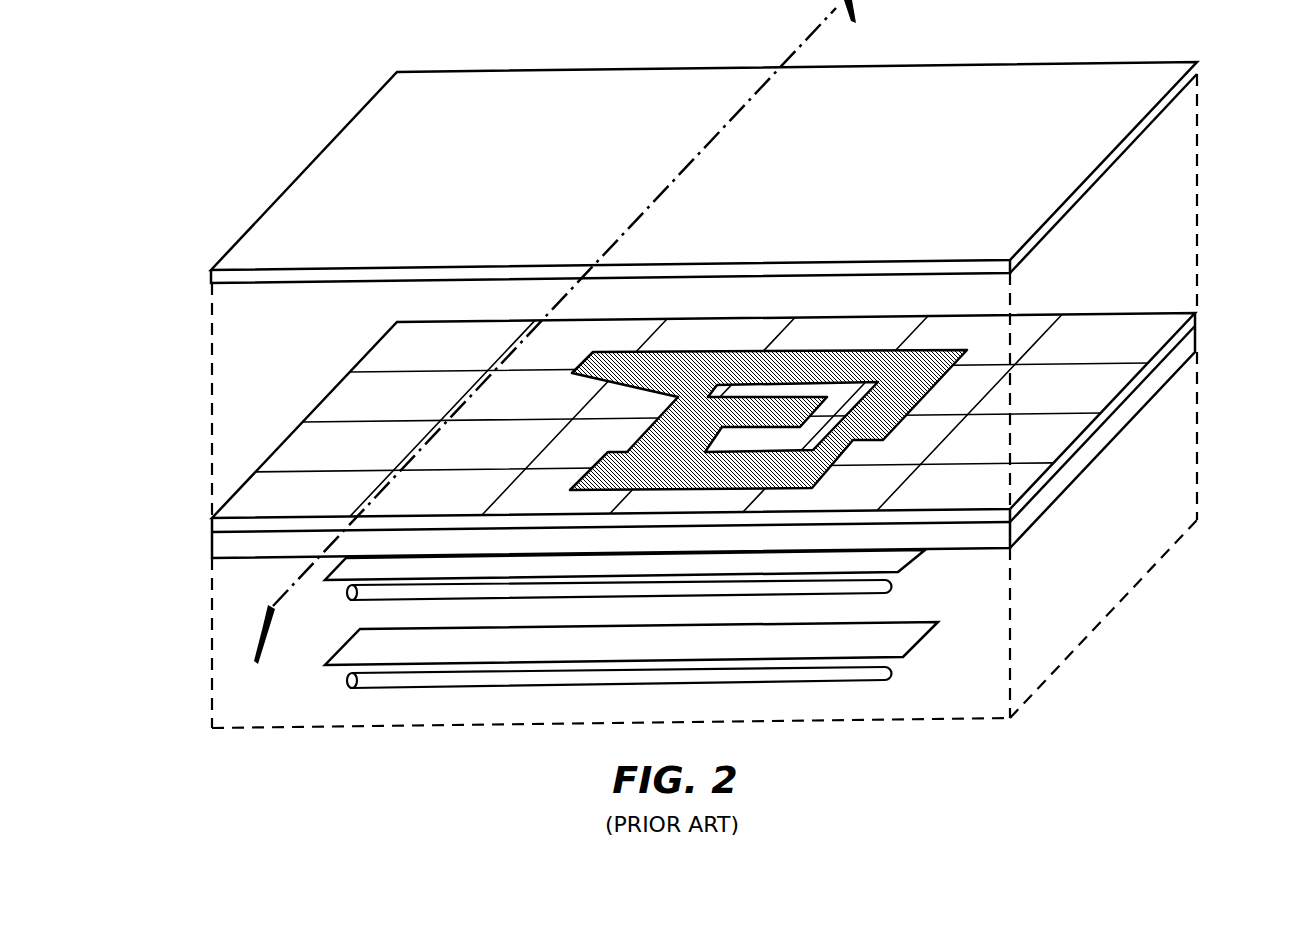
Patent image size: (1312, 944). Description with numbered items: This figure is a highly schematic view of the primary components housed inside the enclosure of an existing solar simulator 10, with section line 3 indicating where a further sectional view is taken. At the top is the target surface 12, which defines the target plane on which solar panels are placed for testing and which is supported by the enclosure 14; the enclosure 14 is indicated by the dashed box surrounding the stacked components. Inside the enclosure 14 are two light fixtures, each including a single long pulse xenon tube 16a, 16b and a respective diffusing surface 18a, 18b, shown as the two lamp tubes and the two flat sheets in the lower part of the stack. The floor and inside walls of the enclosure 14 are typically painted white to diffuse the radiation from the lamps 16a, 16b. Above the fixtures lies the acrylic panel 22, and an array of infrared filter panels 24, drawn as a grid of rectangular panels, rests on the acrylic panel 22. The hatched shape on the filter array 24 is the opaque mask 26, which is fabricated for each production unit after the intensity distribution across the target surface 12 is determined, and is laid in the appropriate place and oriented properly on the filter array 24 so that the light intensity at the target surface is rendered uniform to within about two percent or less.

The solar simulator 10 is at (258, 130).
The target surface 12 is at (508, 125).
The enclosure 14 is at (1163, 175).
The xenon tube 16a is at (885, 672).
The xenon tube 16b is at (885, 583).
The diffusing surface 18a is at (395, 647).
The diffusing surface 18b is at (367, 567).
The acrylic panel 22 is at (237, 547).
The array of infrared filter panels 24 is at (340, 450).
The mask 26 is at (608, 453).
The section line 3 is at (557, 347).